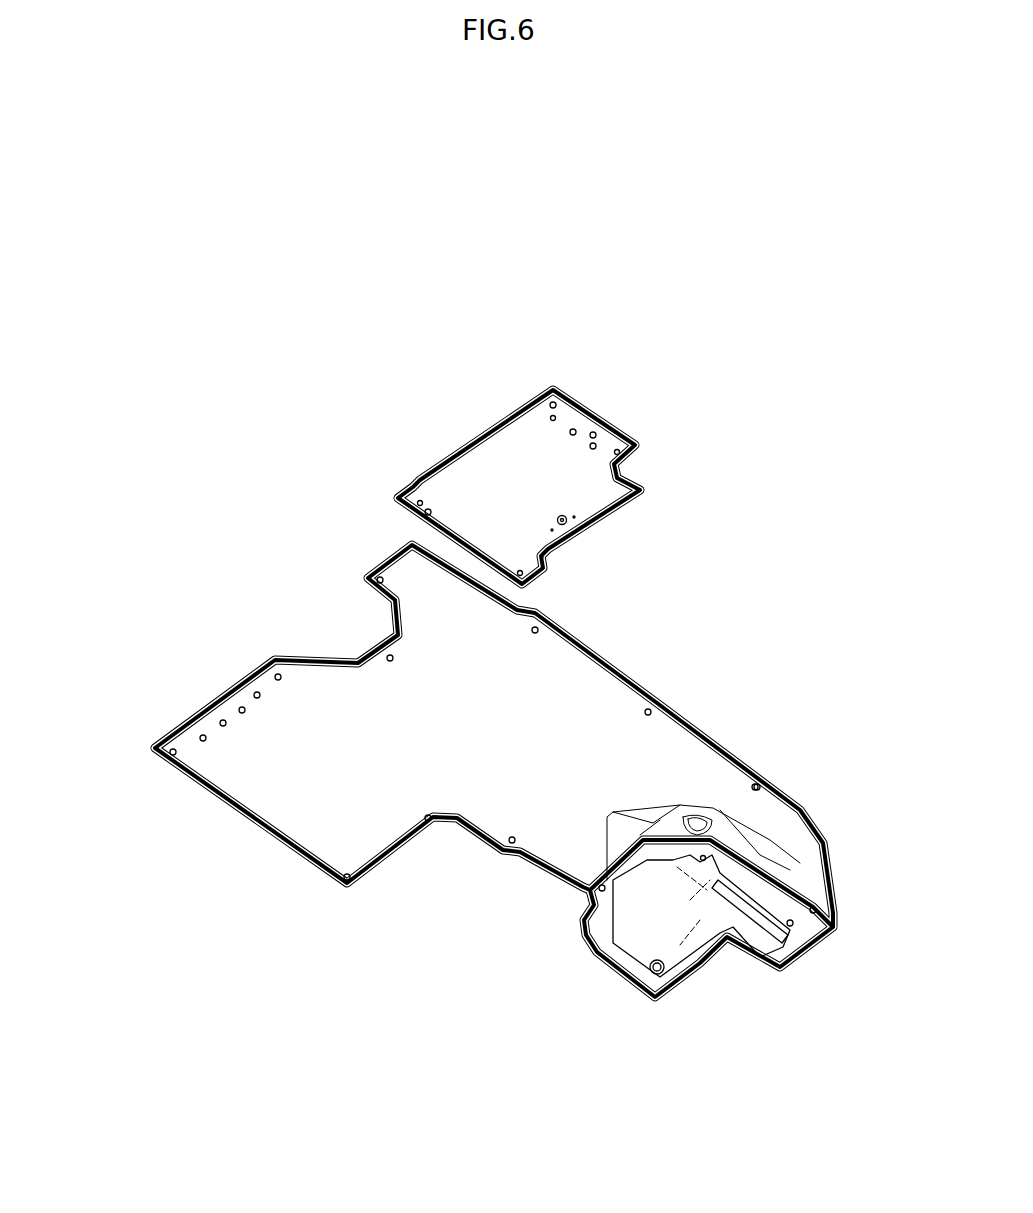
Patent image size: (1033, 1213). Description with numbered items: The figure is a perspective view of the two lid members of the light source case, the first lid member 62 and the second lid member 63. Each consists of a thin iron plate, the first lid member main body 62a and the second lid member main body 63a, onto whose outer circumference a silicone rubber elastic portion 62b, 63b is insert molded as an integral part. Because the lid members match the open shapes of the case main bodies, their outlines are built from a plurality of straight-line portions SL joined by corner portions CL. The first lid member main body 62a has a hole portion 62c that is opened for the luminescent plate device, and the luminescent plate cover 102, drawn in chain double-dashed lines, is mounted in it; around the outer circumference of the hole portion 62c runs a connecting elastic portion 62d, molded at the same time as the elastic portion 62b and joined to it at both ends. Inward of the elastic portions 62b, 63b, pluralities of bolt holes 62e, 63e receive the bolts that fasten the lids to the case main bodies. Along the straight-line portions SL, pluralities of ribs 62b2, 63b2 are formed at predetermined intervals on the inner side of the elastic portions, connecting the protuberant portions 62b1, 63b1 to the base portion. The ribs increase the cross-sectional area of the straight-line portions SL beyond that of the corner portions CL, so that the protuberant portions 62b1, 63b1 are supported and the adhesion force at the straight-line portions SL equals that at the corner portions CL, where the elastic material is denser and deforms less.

The first lid member 62 is at (520, 808).
The first lid member main body 62a is at (243, 732).
The elastic portion 62b is at (193, 715).
The protuberant portion 62b1 is at (663, 712).
The ribs 62b2 is at (320, 852).
The hole portion 62c is at (688, 953).
The connecting elastic portion 62d is at (773, 880).
The bolt holes 62e is at (653, 705).
The second lid member 63 is at (550, 442).
The second lid member main body 63a is at (493, 463).
The elastic portion 63b is at (445, 458).
The protuberant portion 63b1 is at (632, 446).
The ribs 63b2 is at (587, 403).
The bolt holes 63e is at (556, 390).
The luminescent plate cover 102 is at (715, 945).
The corner portions CL is at (650, 487).
The straight-line portions SL is at (614, 407).